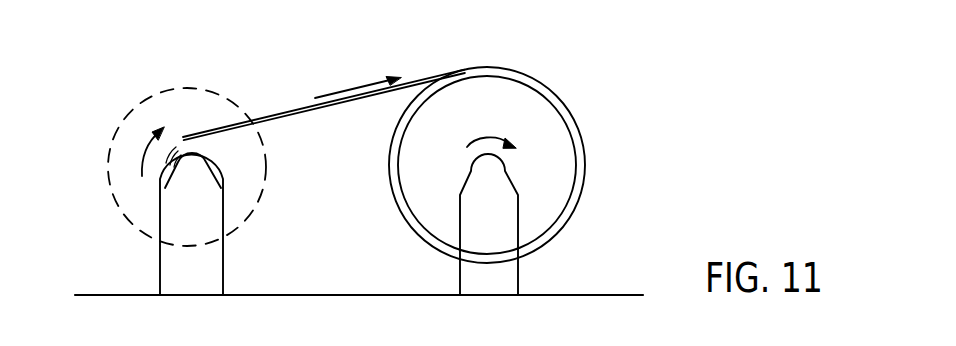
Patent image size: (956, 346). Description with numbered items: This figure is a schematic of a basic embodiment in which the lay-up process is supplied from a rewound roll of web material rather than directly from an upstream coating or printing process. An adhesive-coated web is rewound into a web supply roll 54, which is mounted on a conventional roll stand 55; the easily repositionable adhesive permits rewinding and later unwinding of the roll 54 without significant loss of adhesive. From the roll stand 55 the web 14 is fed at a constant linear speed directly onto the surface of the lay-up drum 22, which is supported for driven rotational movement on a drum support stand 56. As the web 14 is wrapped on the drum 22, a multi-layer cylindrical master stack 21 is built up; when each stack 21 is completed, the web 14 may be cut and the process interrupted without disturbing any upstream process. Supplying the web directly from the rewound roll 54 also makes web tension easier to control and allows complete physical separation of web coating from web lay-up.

The web 14 is at (292, 111).
The multi-layer cylindrical master stack 21 is at (559, 100).
The lay-up drum 22 is at (555, 173).
The web supply roll 54 is at (108, 166).
The roll stand 55 is at (202, 265).
The drum support stand 56 is at (497, 274).